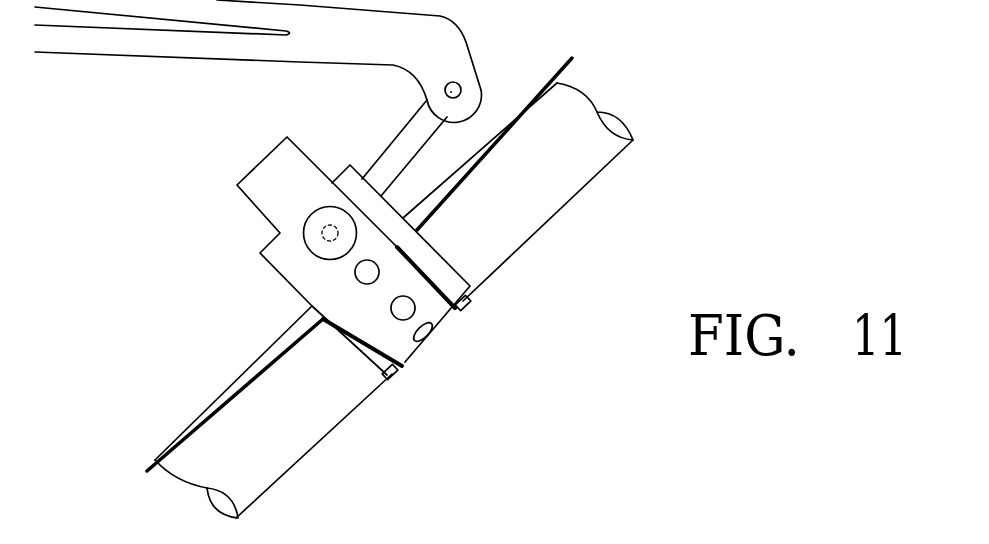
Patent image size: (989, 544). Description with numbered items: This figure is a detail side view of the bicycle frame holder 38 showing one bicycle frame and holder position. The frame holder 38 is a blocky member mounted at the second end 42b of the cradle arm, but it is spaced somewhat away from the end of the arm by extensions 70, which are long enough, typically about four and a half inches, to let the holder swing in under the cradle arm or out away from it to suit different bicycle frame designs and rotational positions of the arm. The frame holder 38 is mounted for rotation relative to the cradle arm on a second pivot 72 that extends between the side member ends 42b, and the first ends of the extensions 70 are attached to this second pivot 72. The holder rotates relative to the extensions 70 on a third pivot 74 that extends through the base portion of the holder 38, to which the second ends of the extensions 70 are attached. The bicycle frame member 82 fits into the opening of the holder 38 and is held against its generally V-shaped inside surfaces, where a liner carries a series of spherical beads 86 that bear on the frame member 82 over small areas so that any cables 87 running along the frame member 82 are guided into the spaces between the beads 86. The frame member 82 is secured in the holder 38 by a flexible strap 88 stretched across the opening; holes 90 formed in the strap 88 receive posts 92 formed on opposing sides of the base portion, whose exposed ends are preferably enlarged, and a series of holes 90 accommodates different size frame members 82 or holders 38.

The bicycle frame holder 38 is at (178, 237).
The second end of side member 42b is at (466, 60).
The extensions 70 is at (390, 153).
The second pivot 72 is at (446, 90).
The third pivot 74 is at (324, 228).
The bicycle frame member 82 is at (533, 203).
The beads 86 is at (467, 307).
The cables 87 is at (260, 374).
The flexible strap 88 is at (262, 168).
The holes 90 is at (368, 272).
The posts 92 is at (313, 265).